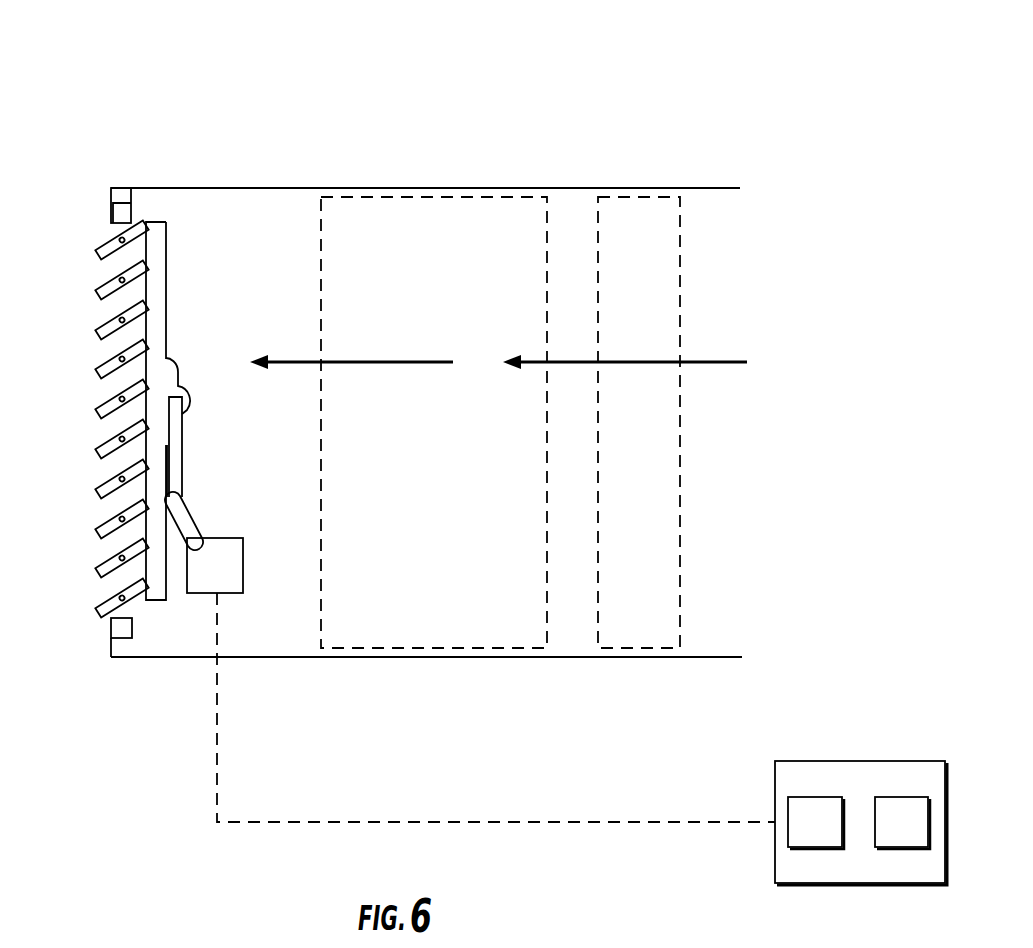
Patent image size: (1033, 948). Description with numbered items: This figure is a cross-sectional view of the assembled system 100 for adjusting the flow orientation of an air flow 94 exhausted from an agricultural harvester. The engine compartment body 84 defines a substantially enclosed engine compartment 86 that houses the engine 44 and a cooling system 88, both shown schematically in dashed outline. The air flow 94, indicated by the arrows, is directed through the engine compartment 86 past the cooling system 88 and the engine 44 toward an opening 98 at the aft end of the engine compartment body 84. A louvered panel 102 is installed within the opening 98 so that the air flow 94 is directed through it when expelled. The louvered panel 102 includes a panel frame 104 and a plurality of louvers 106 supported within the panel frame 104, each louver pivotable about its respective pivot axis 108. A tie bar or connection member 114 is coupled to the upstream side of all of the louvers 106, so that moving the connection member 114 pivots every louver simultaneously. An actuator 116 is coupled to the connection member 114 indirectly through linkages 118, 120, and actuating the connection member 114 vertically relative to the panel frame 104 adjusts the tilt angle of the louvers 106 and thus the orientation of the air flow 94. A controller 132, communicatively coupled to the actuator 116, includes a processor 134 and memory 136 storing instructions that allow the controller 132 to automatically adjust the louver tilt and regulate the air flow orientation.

The system 100 is at (77, 112).
The engine compartment body 84 is at (290, 188).
The engine compartment 86 is at (576, 205).
The louvered panel 102 is at (103, 212).
The panel frame 104 is at (123, 210).
The connection member 114 is at (157, 284).
The pivot axes 108 is at (104, 398).
The louvers 106 is at (104, 563).
The linkage 118 is at (175, 460).
The linkage 120 is at (183, 527).
The actuator 116 is at (232, 557).
The opening 98 is at (123, 640).
The engine 44 is at (467, 632).
The cooling system 88 is at (642, 632).
The air flow 94 is at (375, 362).
The controller 132 is at (861, 791).
The memory 136 is at (832, 835).
The processor 134 is at (919, 835).